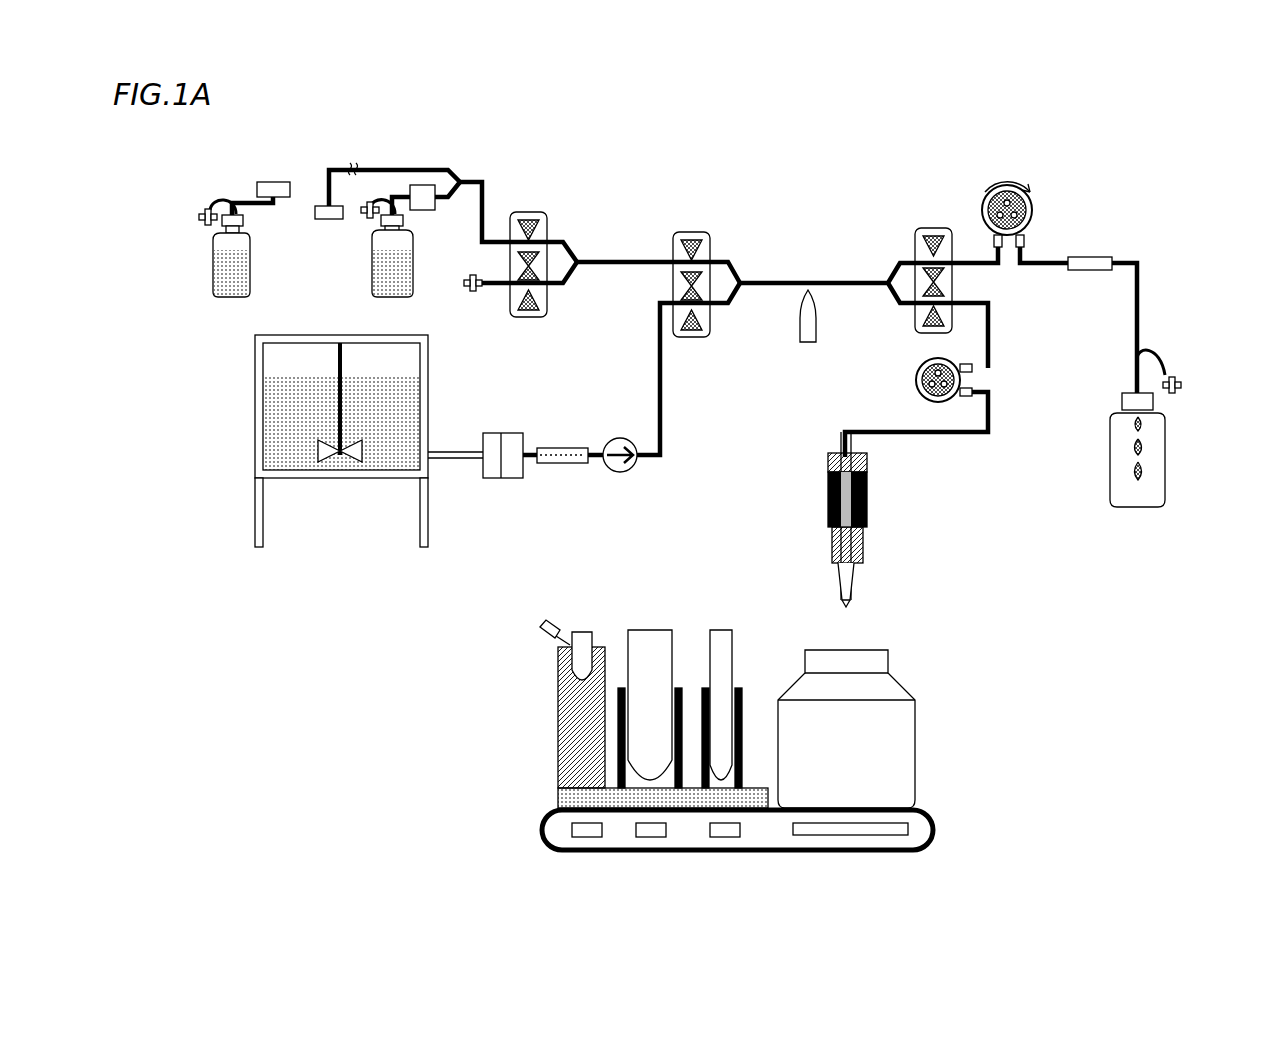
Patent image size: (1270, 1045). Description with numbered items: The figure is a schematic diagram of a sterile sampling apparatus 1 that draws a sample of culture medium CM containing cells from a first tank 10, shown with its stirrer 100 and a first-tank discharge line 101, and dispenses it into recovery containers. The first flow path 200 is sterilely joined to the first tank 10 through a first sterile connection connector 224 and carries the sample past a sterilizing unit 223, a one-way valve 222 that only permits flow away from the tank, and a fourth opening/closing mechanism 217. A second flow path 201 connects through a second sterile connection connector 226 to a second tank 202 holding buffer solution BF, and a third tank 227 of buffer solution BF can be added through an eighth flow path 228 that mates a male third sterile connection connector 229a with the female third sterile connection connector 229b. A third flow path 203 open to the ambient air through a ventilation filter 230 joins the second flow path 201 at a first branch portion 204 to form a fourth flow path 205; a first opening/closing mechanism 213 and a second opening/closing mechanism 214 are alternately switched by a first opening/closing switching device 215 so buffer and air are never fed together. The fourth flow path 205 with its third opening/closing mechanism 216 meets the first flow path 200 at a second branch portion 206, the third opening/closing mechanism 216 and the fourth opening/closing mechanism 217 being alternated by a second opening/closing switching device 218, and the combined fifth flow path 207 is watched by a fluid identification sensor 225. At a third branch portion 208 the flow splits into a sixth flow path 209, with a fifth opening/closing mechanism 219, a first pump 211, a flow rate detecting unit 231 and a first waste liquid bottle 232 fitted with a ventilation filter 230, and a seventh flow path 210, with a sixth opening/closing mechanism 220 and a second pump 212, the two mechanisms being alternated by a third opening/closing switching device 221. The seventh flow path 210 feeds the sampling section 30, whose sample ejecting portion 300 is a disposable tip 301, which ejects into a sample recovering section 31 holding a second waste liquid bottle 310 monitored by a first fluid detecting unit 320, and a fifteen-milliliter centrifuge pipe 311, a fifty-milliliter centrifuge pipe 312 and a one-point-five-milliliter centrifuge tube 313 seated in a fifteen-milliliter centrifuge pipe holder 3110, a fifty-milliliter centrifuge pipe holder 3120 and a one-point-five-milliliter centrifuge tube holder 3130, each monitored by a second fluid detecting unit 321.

The sterile sampling apparatus 1 is at (752, 168).
The first tank 10 is at (255, 380).
The stirrer 100 is at (352, 464).
The first-tank discharge line 101 is at (455, 462).
The culture medium CM is at (290, 440).
The buffer solution BF is at (225, 272).
The first flow path 200 is at (665, 435).
The second flow path 201 is at (490, 190).
The second tank 202 is at (370, 265).
The third flow path 203 is at (553, 290).
The first branch portion 204 is at (583, 258).
The fourth flow path 205 is at (632, 270).
The second branch portion 206 is at (750, 272).
The fifth flow path 207 is at (830, 278).
The third branch portion 208 is at (886, 290).
The sixth flow path 209 is at (976, 260).
The seventh flow path 210 is at (992, 320).
The first pump 211 is at (1015, 183).
The second pump 212 is at (915, 382).
The first opening/closing mechanism 213 is at (547, 212).
The second opening/closing mechanism 214 is at (525, 312).
The first opening/closing switching device 215 is at (540, 318).
The third opening/closing mechanism 216 is at (704, 232).
The fourth opening/closing mechanism 217 is at (693, 338).
The second opening/closing switching device 218 is at (690, 232).
The fifth opening/closing mechanism 219 is at (927, 228).
The sixth opening/closing mechanism 220 is at (930, 325).
The third opening/closing switching device 221 is at (915, 250).
The one-way valve 222 is at (620, 475).
The sterilizing unit 223 is at (560, 466).
The first sterile connection connector 224 is at (500, 480).
The fluid identification sensor 225 is at (800, 322).
The second sterile connection connector 226 is at (425, 212).
The third tank 227 is at (252, 268).
The eighth flow path 228 is at (405, 170).
The third sterile connection connector (male type) 229a is at (322, 220).
The third sterile connection connector (female type) 229b is at (276, 182).
The ventilation filter 230 is at (205, 226).
The flow rate detecting unit 231 is at (1095, 257).
The first waste liquid bottle 232 is at (1112, 490).
The sampling section 30 is at (845, 499).
The sample ejecting portion 300 is at (852, 598).
The disposable tip 301 is at (840, 578).
The sample recovering section 31 is at (714, 715).
The second waste liquid bottle 310 is at (905, 685).
The 15 mL centrifuge pipe 311 is at (735, 640).
The 15 mL centrifuge pipe holder 3110 is at (745, 700).
The 50 mL centrifuge pipe 312 is at (650, 630).
The 50 mL centrifuge pipe holder 3120 is at (682, 690).
The 1.5 mL centrifuge tube 313 is at (560, 633).
The 1.5 mL centrifuge tube holder 3130 is at (558, 685).
The first fluid detecting unit 320 is at (845, 838).
The second fluid detecting unit 321 is at (585, 840).